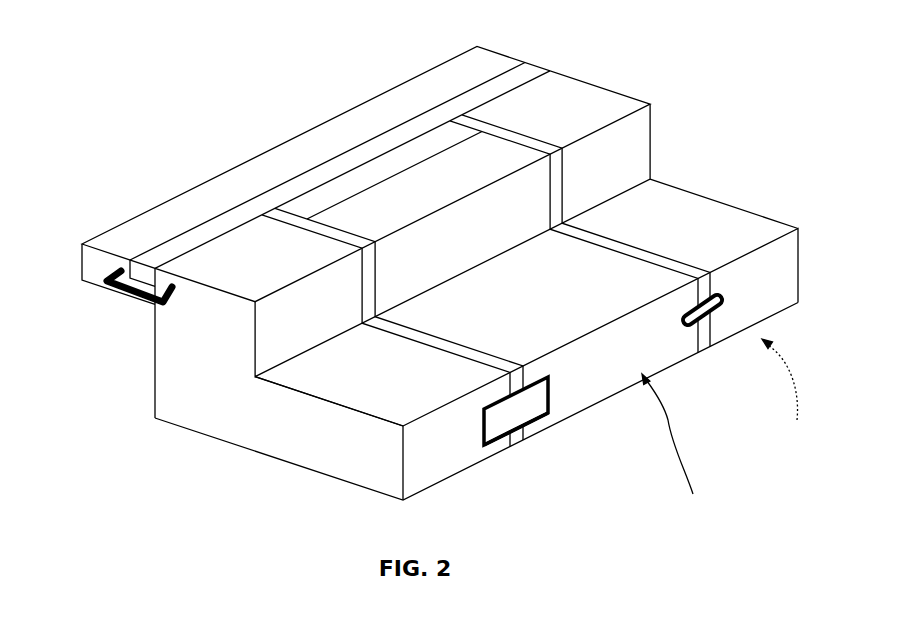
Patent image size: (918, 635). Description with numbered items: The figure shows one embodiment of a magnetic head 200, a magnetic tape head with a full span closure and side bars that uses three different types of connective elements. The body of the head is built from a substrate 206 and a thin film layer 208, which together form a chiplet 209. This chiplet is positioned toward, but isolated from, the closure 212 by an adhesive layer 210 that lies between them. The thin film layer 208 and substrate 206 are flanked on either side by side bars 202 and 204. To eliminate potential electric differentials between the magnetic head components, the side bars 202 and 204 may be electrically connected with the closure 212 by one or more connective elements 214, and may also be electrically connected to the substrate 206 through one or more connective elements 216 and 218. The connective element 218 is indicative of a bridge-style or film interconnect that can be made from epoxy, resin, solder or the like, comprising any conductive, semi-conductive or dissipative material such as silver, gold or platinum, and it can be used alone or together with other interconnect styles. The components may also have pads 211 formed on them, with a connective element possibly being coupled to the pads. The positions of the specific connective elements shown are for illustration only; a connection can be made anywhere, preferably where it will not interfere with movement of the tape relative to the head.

The magnetic head 200 is at (787, 391).
The side bar 202 is at (160, 422).
The side bar 204 is at (735, 206).
The substrate 206 is at (613, 365).
The thin film layer 208 is at (330, 193).
The chiplet 209 is at (675, 443).
The adhesive layer 210 is at (360, 152).
The pads 211 is at (535, 431).
The closure 212 is at (355, 124).
The connective element 214 is at (103, 284).
The connective element 216 is at (490, 446).
The connective element 218 is at (681, 330).